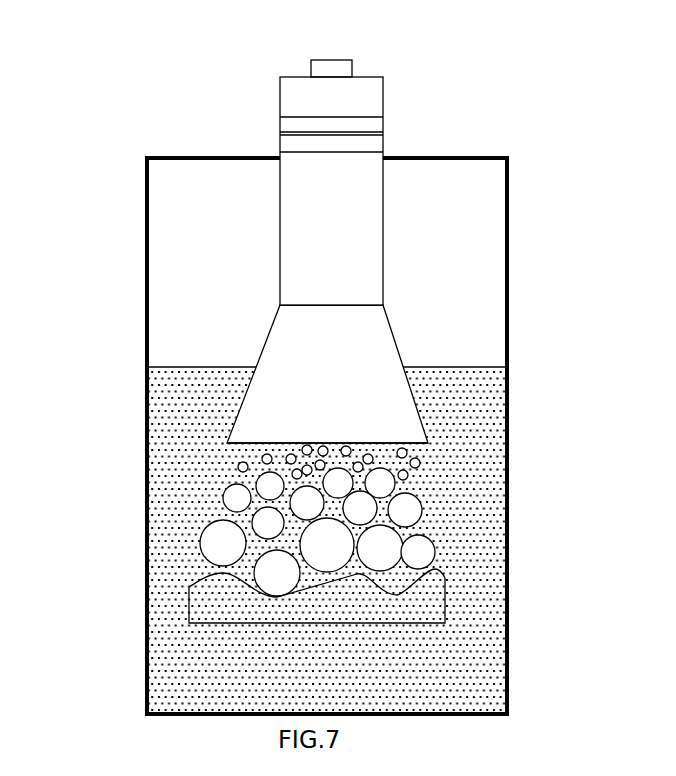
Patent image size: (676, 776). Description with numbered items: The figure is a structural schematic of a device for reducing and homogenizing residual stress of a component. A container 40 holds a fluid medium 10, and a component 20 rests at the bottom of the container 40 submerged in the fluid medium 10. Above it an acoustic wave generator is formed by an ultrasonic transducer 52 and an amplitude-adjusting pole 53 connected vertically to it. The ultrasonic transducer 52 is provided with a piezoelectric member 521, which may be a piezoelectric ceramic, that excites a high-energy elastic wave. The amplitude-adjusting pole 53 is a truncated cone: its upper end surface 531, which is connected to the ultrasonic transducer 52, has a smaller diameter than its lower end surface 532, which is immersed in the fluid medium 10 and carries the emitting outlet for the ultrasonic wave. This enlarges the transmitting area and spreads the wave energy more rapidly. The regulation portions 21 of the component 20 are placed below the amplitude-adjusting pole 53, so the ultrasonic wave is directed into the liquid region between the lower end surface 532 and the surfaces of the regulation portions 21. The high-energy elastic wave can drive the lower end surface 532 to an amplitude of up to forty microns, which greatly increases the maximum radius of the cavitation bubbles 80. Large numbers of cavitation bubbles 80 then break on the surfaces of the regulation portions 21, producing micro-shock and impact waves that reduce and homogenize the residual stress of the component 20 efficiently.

The fluid medium 10 is at (190, 663).
The component 20 is at (425, 613).
The regulation portion 21 is at (385, 583).
The container 40 is at (147, 285).
The ultrasonic transducer 52 is at (355, 247).
The piezoelectric member 521 is at (372, 127).
The amplitude-adjusting pole 53 is at (362, 368).
The upper end surface 531 is at (372, 303).
The lower end surface 532 is at (370, 442).
The cavitation bubbles 80 is at (242, 495).